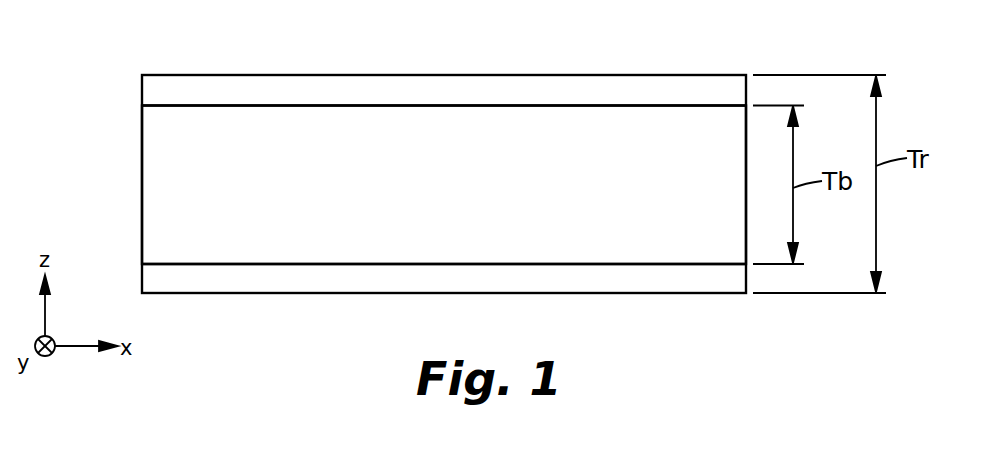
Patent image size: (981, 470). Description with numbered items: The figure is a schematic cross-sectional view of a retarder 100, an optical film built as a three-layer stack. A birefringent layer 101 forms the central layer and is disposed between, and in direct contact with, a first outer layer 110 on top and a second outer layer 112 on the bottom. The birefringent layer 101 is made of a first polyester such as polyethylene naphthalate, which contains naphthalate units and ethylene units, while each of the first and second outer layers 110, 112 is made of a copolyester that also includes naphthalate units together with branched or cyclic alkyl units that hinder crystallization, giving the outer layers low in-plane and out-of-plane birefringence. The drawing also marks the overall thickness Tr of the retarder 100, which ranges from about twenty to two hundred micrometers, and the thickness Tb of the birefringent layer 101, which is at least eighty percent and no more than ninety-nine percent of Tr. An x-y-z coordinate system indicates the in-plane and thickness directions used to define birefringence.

The retarder 100 is at (707, 58).
The first outer layer 110 is at (412, 88).
The birefringent layer 101 is at (158, 192).
The second outer layer 112 is at (267, 282).